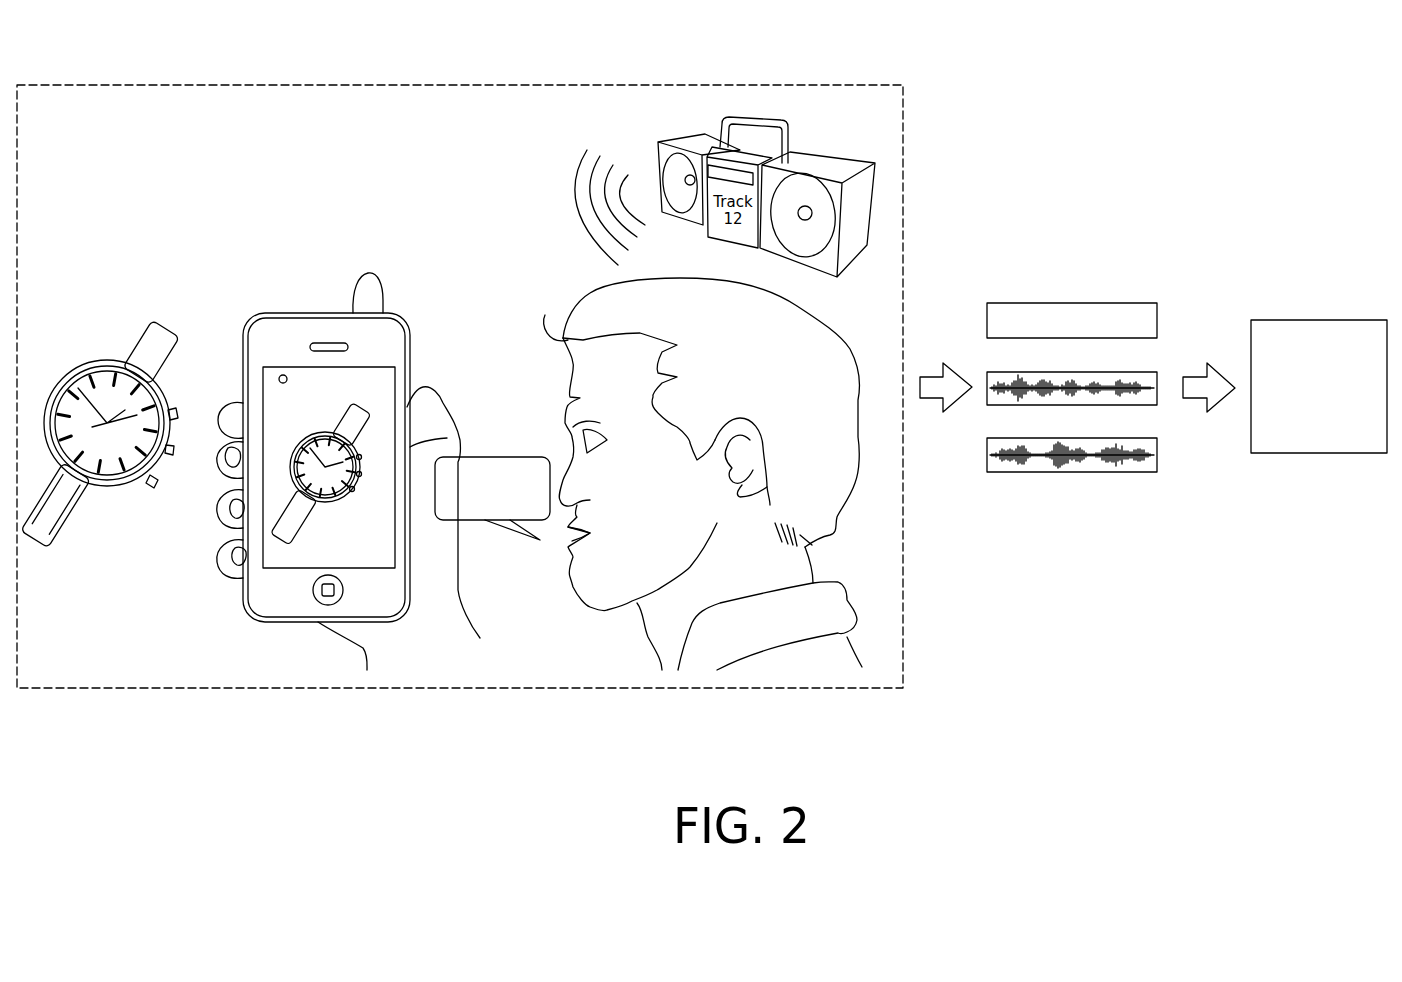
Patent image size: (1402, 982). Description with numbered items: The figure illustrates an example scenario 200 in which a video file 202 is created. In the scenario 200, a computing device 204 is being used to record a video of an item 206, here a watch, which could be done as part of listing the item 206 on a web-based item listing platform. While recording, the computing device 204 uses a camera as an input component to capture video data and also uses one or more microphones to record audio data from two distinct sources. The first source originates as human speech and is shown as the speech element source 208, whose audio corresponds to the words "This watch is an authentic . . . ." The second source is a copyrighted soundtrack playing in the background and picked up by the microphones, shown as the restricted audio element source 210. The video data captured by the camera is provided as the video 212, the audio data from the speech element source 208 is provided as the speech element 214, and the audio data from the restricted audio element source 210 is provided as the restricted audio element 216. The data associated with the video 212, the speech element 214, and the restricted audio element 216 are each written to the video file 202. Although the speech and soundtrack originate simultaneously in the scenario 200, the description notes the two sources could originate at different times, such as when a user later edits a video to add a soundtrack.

The scenario 200 is at (905, 163).
The video file 202 is at (1320, 320).
The computing device 204 is at (308, 313).
The item 206 is at (153, 331).
The speech element source 208 is at (493, 457).
The restricted audio element source 210 is at (575, 190).
The video 212 is at (1118, 303).
The speech element 214 is at (1118, 372).
The restricted audio element 216 is at (1118, 438).